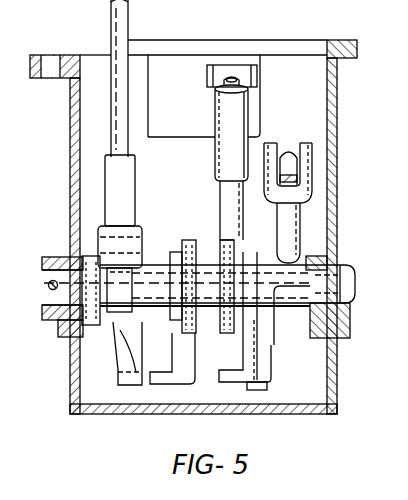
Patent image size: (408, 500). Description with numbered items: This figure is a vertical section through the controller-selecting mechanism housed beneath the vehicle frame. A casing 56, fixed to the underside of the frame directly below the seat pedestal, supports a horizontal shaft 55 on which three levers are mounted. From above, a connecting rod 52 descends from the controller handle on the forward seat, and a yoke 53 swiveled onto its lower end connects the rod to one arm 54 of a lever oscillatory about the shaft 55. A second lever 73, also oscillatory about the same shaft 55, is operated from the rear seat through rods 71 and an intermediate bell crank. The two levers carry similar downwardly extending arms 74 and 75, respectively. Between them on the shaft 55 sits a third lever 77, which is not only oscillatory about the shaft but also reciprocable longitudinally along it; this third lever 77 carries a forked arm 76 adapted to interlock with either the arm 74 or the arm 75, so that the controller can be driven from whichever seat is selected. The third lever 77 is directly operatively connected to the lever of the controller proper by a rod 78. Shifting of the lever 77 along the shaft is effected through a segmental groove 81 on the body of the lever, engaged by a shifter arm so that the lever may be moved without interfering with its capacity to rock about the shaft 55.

The connecting rod 52 is at (128, 24).
The yoke 53 is at (98, 230).
The arm of lever 54 is at (113, 269).
The shaft 55 is at (67, 273).
The casing 56 is at (70, 136).
The rods 71 is at (289, 143).
The lever 73 is at (301, 224).
The downwardly extending arm 74 is at (115, 352).
The downwardly extending arm 75 is at (272, 348).
The forked arm 76 is at (225, 379).
The third lever 77 is at (227, 205).
The rod 78 is at (232, 66).
The segmental groove 81 is at (197, 241).